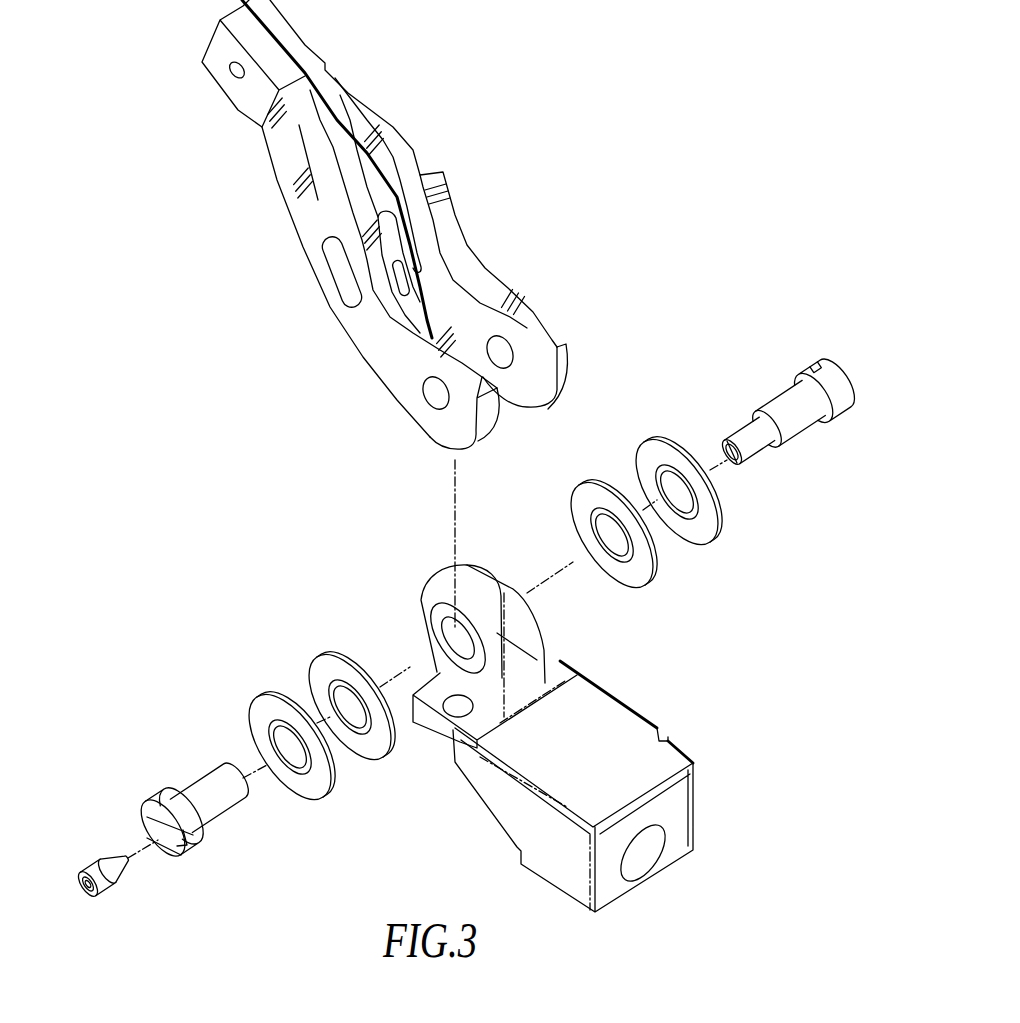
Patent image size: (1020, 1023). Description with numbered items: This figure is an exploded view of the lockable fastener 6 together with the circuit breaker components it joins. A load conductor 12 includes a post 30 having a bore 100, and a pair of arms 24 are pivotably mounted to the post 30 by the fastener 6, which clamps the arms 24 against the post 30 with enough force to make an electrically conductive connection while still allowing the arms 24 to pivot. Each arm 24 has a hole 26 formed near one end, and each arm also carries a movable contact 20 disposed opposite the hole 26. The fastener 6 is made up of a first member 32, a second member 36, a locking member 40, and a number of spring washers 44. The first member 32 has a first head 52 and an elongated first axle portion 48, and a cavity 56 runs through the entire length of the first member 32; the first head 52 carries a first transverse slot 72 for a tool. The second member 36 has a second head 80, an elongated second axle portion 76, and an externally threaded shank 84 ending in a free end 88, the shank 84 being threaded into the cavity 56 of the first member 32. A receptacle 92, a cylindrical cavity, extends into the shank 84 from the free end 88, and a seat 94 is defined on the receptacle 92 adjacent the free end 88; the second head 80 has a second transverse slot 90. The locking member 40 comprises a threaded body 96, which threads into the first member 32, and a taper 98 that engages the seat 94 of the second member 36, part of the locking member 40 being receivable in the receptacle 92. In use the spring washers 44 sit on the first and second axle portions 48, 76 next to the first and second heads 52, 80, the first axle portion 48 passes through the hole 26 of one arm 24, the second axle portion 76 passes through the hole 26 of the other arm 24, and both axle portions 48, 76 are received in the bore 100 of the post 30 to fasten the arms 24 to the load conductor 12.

The lockable fastener 6 is at (154, 869).
The load conductor 12 is at (632, 690).
The movable contact 20 is at (212, 92).
The arm 24 is at (352, 92).
The hole 26 is at (428, 374).
The post 30 is at (470, 656).
The first member 32 is at (188, 818).
The second member 36 is at (768, 423).
The locking member 40 is at (92, 892).
The spring washer 44 is at (572, 504).
The first axle portion 48 is at (211, 796).
The first head 52 is at (171, 822).
The cavity 56 is at (167, 850).
The first transverse slot 72 is at (197, 853).
The second axle portion 76 is at (790, 413).
The second head 80 is at (826, 389).
The shank 84 is at (753, 438).
The free end 88 is at (732, 452).
The second transverse slot 90 is at (815, 367).
The receptacle 92 is at (731, 452).
The seat 94 is at (701, 430).
The threaded body 96 is at (95, 879).
The taper 98 is at (98, 898).
The bore 100 is at (443, 628).